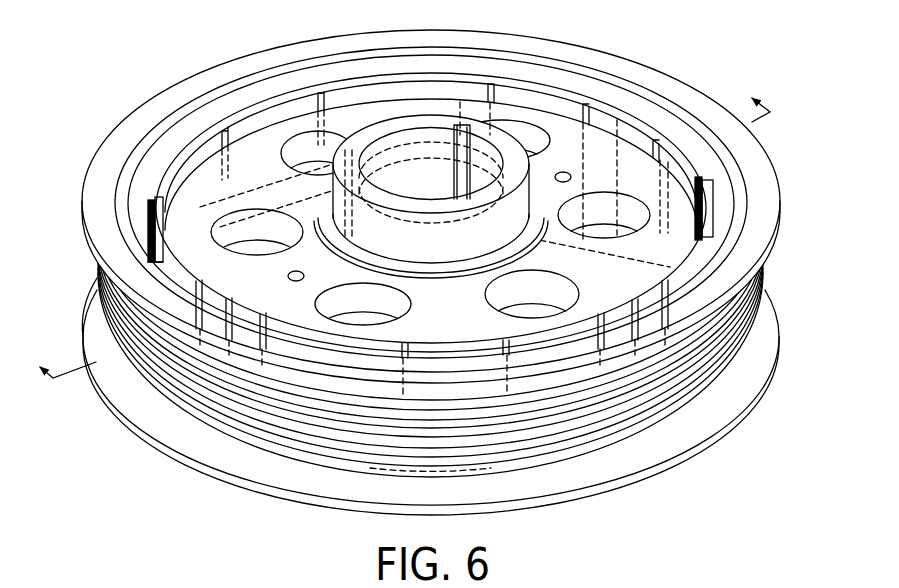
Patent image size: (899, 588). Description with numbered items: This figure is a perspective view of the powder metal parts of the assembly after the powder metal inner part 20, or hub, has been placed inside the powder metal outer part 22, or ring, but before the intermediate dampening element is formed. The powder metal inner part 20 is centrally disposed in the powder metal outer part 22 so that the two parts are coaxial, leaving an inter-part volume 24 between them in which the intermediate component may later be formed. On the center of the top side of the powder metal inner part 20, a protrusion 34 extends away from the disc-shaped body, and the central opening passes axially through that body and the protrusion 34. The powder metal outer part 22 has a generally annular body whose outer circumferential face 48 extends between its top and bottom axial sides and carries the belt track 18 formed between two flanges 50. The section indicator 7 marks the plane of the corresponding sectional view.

The belt track 18 is at (742, 351).
The powder metal inner part 20 is at (557, 125).
The powder metal outer part 22 is at (655, 66).
The inter-part volume 24 is at (188, 174).
The protrusion 34 is at (428, 243).
The outer circumferential face 48 is at (766, 290).
The flanges 50 is at (757, 199).
The section line 7- 7 is at (417, 256).